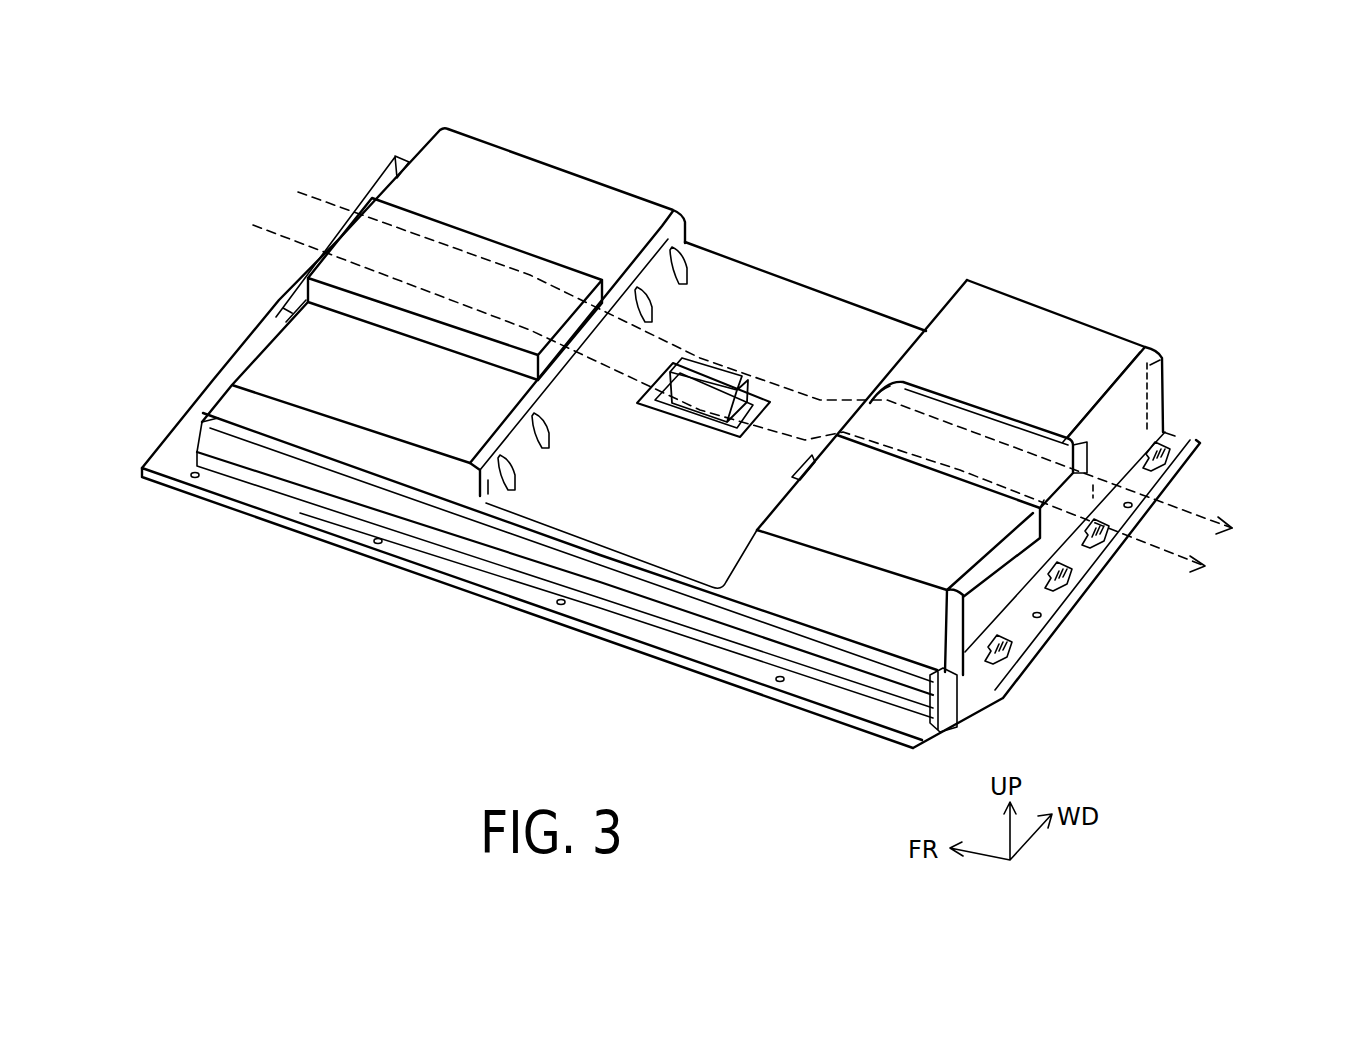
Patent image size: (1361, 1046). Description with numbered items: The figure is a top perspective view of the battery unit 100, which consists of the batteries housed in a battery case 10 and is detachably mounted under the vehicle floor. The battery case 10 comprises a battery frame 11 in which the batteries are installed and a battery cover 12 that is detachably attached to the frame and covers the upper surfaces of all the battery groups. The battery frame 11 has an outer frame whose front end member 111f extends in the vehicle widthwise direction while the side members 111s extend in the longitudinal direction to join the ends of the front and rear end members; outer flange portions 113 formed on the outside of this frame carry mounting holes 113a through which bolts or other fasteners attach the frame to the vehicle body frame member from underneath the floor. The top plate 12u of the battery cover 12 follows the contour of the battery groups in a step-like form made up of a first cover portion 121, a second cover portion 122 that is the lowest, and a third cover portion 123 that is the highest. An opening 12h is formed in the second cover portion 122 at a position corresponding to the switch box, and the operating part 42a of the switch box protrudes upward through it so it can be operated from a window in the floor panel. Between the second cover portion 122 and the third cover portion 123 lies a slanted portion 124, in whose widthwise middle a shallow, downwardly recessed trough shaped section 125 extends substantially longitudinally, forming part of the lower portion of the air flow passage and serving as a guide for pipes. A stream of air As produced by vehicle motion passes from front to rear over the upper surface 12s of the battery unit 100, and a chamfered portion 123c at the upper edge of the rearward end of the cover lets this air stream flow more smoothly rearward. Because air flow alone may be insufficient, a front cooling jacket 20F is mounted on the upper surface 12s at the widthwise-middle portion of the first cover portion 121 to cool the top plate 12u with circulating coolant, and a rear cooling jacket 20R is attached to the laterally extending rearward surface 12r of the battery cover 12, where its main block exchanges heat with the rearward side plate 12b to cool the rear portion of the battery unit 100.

The battery unit 100 is at (642, 146).
The battery case 10 is at (800, 803).
The battery frame 11 is at (814, 727).
The battery cover 12 is at (762, 597).
The upper surface 12s is at (540, 190).
The top plate 12u is at (566, 299).
The rearward surface 12r is at (1166, 400).
The rearward side plate 12b is at (1134, 429).
The opening 12h is at (740, 398).
The front end member 111f is at (206, 397).
The side members 111s is at (458, 548).
The outer flange portions 113 is at (279, 505).
The mounting holes 113a is at (562, 602).
The first cover portion 121 is at (418, 399).
The second cover portion 122 is at (688, 522).
The third cover portion 123 is at (933, 542).
The chamfered portion 123c is at (1041, 468).
The slanted portion 124 is at (761, 508).
The trough shaped section 125 is at (871, 393).
The operating part 42a is at (700, 408).
The front cooling jacket 20F is at (467, 265).
The rear cooling jacket 20R is at (1012, 604).
The air stream As is at (298, 190).